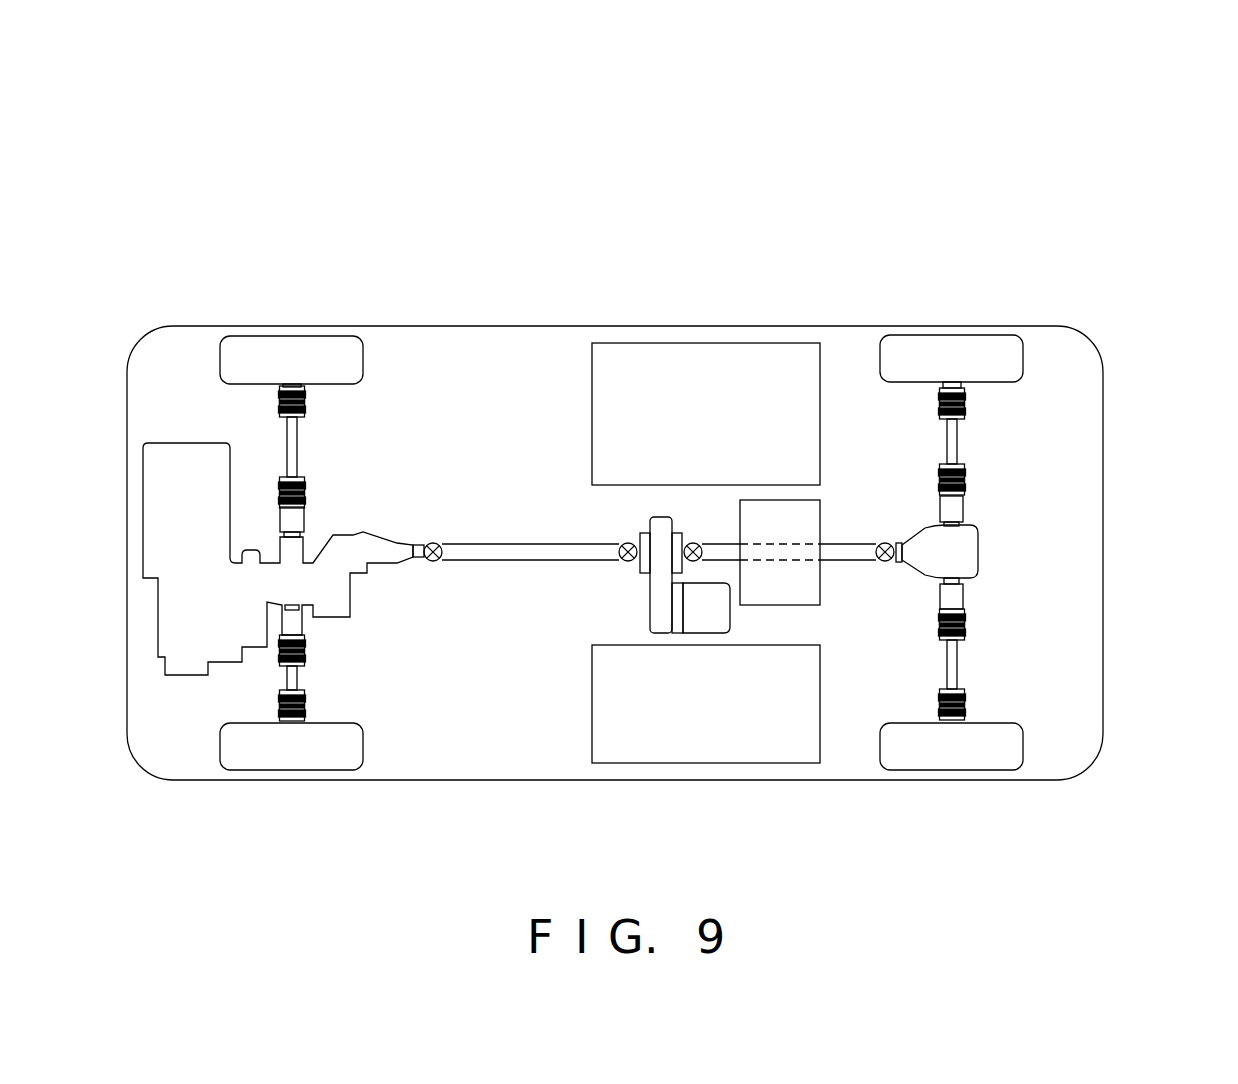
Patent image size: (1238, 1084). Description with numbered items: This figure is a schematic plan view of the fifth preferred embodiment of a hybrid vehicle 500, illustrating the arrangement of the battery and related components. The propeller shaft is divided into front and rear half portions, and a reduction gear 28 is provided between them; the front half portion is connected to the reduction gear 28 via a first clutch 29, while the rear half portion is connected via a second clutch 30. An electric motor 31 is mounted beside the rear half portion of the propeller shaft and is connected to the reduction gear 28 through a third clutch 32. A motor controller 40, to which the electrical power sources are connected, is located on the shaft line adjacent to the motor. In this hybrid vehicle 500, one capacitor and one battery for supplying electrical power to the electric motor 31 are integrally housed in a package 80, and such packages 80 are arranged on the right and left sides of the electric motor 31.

The hybrid vehicle 500 is at (1104, 205).
The package 80 is at (746, 343).
The reduction gear 28 is at (660, 518).
The first clutch 29 is at (640, 537).
The second clutch 30 is at (680, 535).
The electric motor 31 is at (711, 617).
The third clutch 32 is at (668, 620).
The motor controller 40 is at (800, 589).